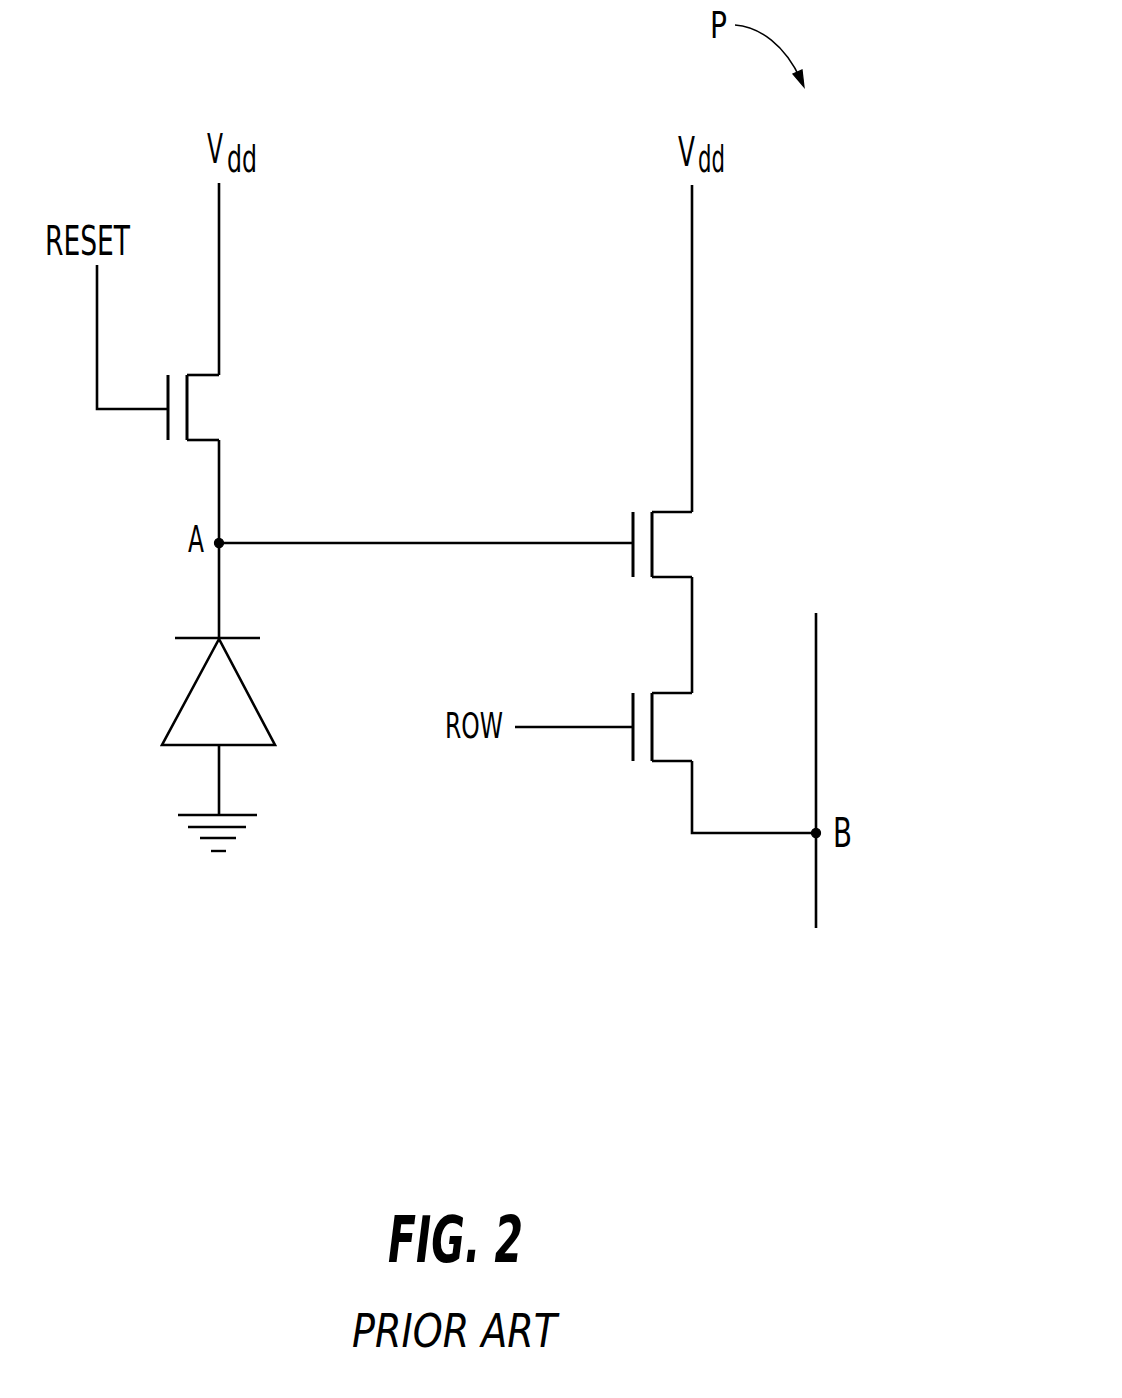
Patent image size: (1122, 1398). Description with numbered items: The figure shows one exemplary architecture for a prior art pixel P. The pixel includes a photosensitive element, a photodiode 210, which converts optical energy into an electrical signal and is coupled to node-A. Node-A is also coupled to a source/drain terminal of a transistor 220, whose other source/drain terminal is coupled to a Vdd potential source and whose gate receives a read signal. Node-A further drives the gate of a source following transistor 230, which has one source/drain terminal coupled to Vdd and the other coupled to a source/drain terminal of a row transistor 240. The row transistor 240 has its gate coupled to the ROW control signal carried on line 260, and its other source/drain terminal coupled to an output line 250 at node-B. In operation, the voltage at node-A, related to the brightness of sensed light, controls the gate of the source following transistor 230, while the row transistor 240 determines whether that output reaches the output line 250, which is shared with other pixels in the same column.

The photodiode 210 is at (242, 736).
The transistor 220 is at (198, 408).
The source following transistor 230 is at (680, 546).
The row transistor 240 is at (682, 728).
The output line 250 is at (818, 660).
The line 260 is at (580, 725).